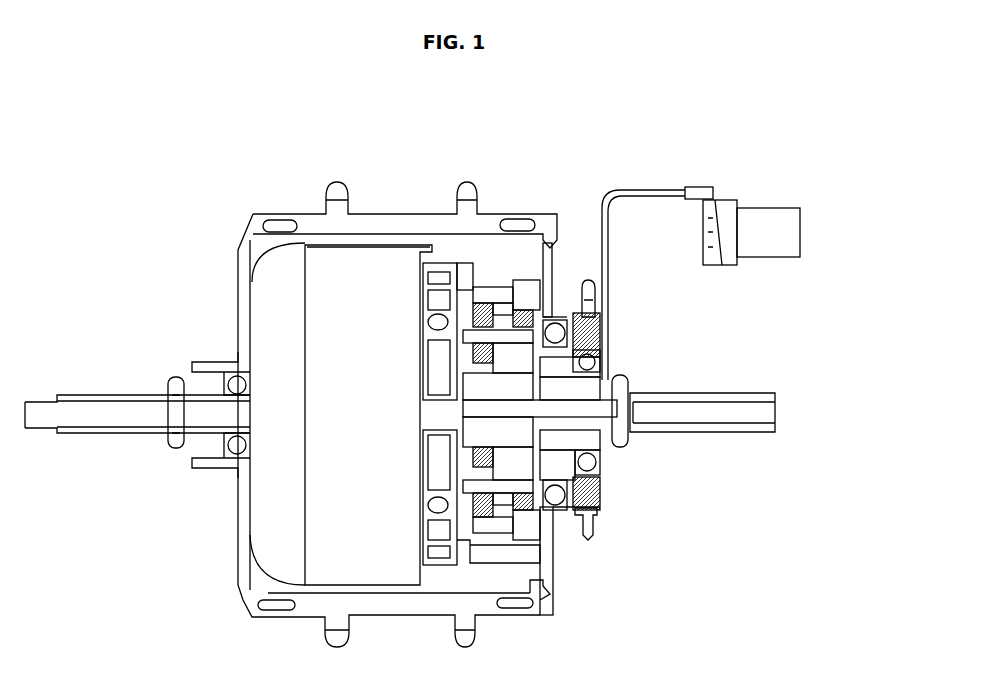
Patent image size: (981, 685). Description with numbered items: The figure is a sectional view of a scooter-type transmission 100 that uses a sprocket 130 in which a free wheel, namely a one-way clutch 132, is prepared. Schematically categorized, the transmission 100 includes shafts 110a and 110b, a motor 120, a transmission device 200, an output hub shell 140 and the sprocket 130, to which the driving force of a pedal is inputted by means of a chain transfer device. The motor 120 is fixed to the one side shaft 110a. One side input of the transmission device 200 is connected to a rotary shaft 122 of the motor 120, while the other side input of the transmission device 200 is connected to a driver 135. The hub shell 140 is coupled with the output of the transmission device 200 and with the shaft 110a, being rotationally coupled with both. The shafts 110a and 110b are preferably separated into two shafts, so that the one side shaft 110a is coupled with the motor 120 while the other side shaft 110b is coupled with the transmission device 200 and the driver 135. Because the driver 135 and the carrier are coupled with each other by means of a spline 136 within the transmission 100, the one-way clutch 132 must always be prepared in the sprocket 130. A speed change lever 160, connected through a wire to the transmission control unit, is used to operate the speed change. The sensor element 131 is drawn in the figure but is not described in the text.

The transmission 100 is at (410, 163).
The one side shaft 110a is at (62, 417).
The other side shaft 110b is at (701, 436).
The motor 120 is at (335, 549).
The rotary shaft 122 is at (410, 418).
The sprocket 130 is at (615, 323).
The sensor 131 is at (563, 307).
The one-way clutch 132 is at (620, 323).
The driver 135 is at (608, 350).
The spline 136 is at (605, 360).
The output hub shell 140 is at (483, 215).
The speed change lever 160 is at (767, 220).
The transmission device 200 is at (500, 277).